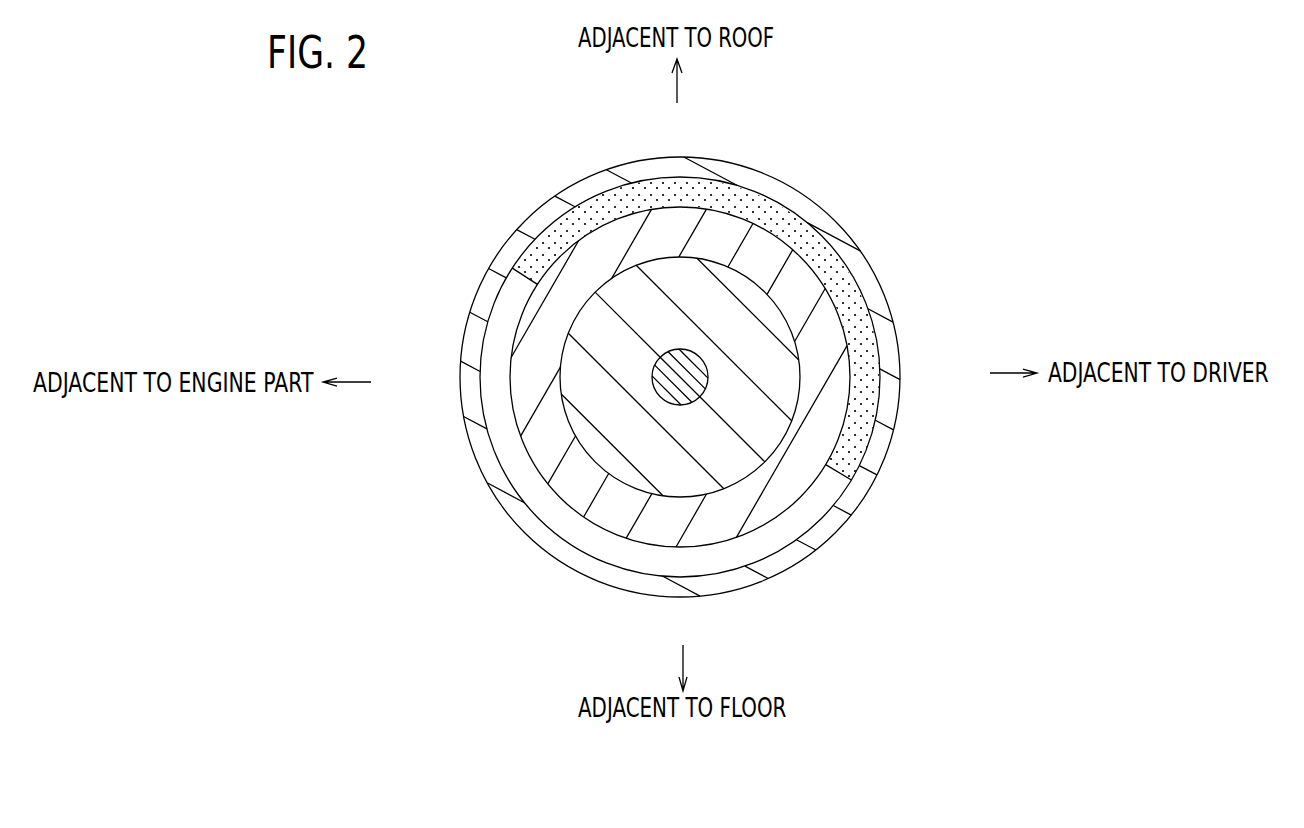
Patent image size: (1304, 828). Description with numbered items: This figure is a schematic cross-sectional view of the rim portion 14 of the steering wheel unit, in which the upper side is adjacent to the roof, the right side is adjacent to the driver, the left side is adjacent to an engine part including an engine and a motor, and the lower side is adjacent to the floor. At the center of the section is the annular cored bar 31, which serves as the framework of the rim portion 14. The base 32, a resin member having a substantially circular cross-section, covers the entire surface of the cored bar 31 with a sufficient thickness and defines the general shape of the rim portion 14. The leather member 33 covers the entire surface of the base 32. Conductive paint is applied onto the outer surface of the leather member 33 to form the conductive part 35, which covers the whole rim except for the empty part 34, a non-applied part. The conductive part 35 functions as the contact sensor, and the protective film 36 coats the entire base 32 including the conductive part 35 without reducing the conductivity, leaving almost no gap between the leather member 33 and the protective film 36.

The rim portion 14 is at (709, 151).
The cored bar 31 is at (682, 365).
The base 32 is at (750, 340).
The leather member 33 is at (570, 490).
The empty part 34 is at (762, 540).
The conductive part 35 is at (571, 224).
The protective film 36 is at (772, 186).